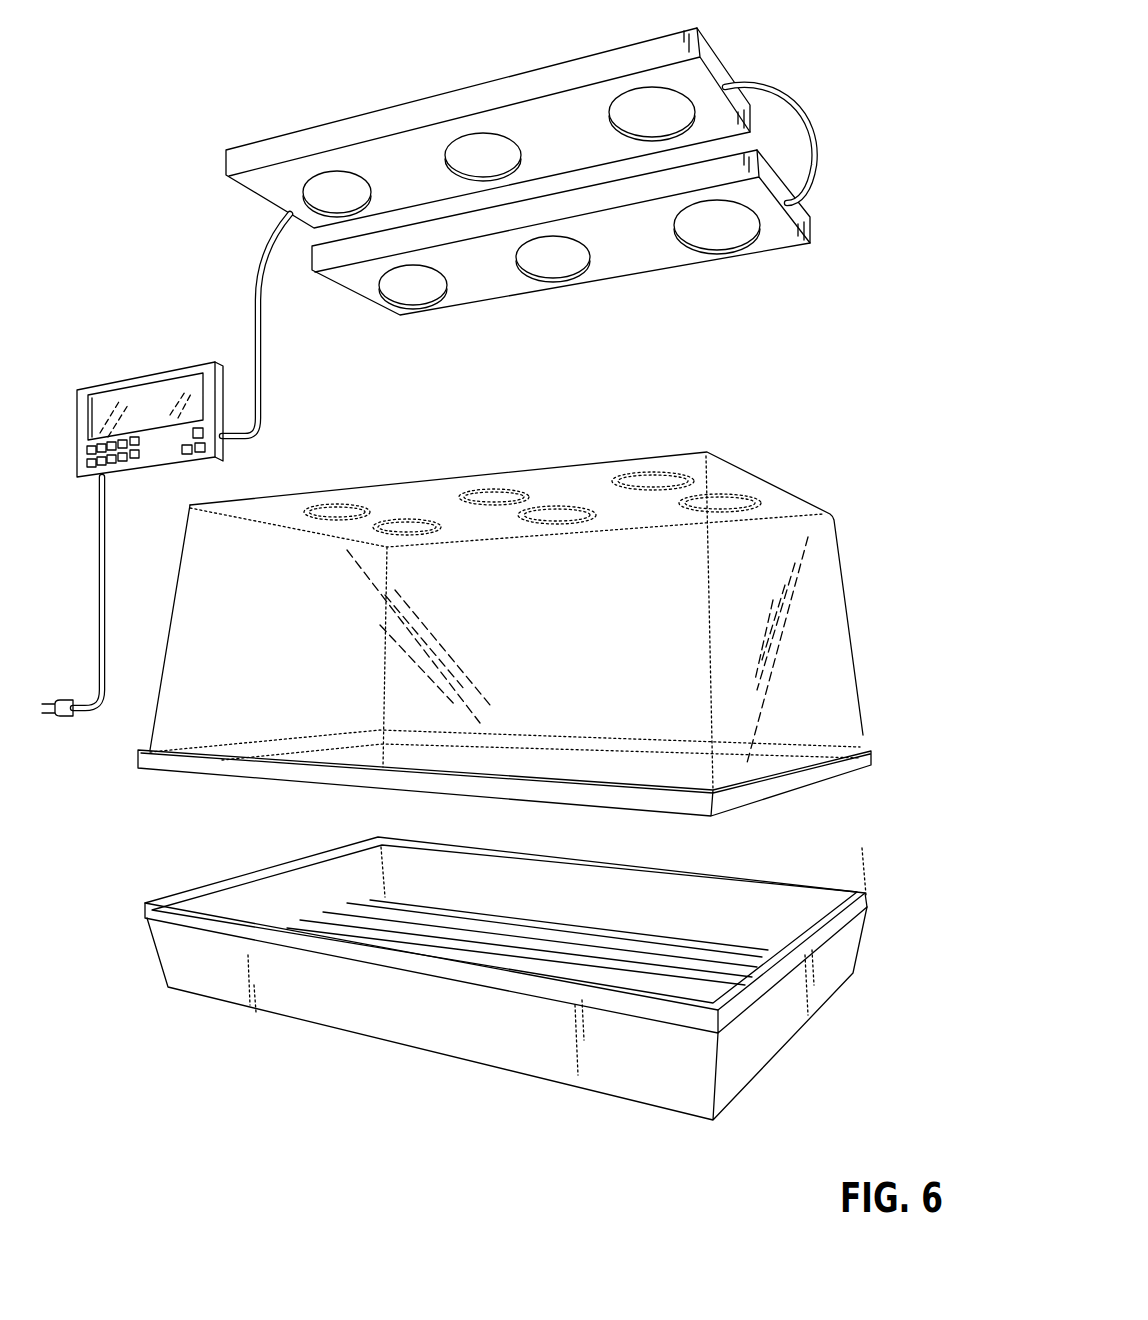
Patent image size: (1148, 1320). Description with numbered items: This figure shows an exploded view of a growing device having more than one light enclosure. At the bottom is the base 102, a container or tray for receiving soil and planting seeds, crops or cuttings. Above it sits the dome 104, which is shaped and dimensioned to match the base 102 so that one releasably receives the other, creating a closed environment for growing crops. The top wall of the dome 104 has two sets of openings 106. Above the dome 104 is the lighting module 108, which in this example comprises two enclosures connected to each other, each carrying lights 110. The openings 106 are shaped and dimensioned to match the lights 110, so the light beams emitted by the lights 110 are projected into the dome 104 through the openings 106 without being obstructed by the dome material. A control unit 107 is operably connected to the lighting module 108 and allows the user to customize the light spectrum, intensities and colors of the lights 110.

The base 102 is at (838, 982).
The dome 104 is at (837, 526).
The openings 106 is at (345, 470).
The control unit 107 is at (168, 370).
The lighting module 108 is at (812, 231).
The lights 110 is at (470, 303).